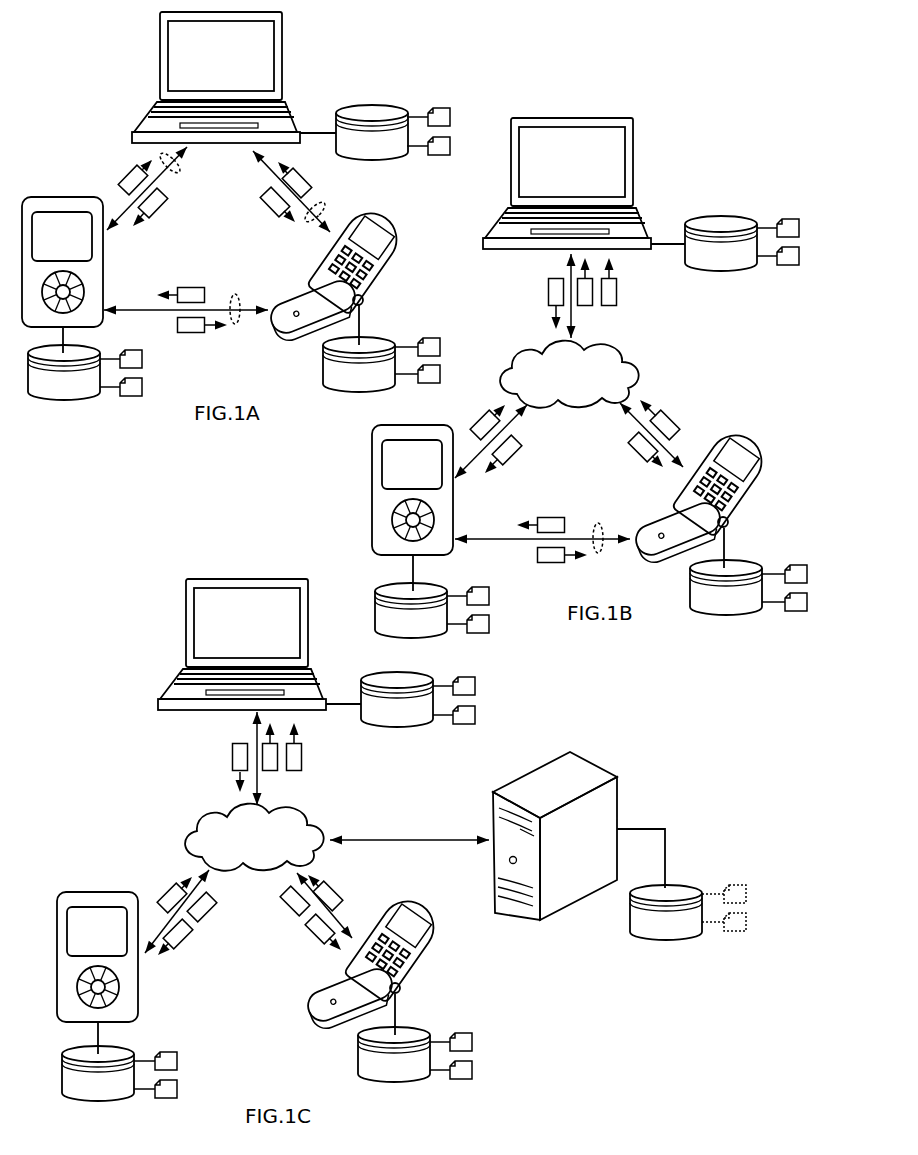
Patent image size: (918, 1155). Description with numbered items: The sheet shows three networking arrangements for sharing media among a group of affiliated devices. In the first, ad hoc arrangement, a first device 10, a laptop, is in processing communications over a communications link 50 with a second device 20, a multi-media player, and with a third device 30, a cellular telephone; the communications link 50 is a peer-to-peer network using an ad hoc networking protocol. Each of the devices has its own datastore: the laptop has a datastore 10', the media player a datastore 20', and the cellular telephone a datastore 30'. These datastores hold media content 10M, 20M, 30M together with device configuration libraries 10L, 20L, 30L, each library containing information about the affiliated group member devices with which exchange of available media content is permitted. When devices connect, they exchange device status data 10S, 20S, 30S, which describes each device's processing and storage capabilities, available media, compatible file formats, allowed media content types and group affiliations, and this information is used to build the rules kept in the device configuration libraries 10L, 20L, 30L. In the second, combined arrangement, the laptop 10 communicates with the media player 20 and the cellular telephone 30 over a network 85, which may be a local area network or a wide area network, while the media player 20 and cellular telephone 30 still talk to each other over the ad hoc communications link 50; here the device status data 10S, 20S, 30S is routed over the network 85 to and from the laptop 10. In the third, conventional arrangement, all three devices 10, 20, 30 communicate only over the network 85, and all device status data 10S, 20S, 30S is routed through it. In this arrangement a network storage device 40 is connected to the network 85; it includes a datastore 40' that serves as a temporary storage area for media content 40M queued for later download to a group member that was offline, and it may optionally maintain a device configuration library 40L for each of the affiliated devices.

In FIG. 1A, the first device 10 is at (216, 77).
In FIG. 1B, the first device 10 is at (567, 183).
In FIG. 1C, the first device 10 is at (242, 644).
In FIG. 1A, the datastore 10' is at (354, 132).
In FIG. 1B, the datastore 10' is at (704, 243).
In FIG. 1C, the datastore 10' is at (379, 699).
In FIG. 1A, the device configuration library 10L is at (451, 118).
In FIG. 1B, the device configuration library 10L is at (800, 229).
In FIG. 1C, the device configuration library 10L is at (476, 687).
In FIG. 1A, the media content 10M is at (451, 147).
In FIG. 1B, the media content 10M is at (800, 257).
In FIG. 1C, the media content 10M is at (476, 716).
In FIG. 1A, the device status data 10S is at (163, 211).
In FIG. 1B, the device status data 10S is at (550, 296).
In FIG. 1C, the device status data 10S is at (233, 760).
In FIG. 1A, the second device 20 is at (62, 262).
In FIG. 1B, the second device 20 is at (412, 490).
In FIG. 1C, the second device 20 is at (97, 957).
In FIG. 1A, the datastore 20' is at (64, 363).
In FIG. 1B, the datastore 20' is at (411, 596).
In FIG. 1C, the datastore 20' is at (98, 1061).
In FIG. 1A, the device configuration library 20L is at (143, 360).
In FIG. 1B, the device configuration library 20L is at (490, 597).
In FIG. 1C, the device configuration library 20L is at (178, 1062).
In FIG. 1A, the media content 20M is at (143, 388).
In FIG. 1B, the media content 20M is at (490, 625).
In FIG. 1C, the media content 20M is at (178, 1090).
In FIG. 1A, the device status data 20S is at (128, 173).
In FIG. 1B, the device status data 20S is at (585, 306).
In FIG. 1C, the device status data 20S is at (270, 772).
In FIG. 1A, the third device 30 is at (337, 274).
In FIG. 1B, the third device 30 is at (702, 496).
In FIG. 1C, the third device 30 is at (374, 962).
In FIG. 1A, the datastore 30' is at (359, 348).
In FIG. 1B, the datastore 30' is at (726, 571).
In FIG. 1C, the datastore 30' is at (394, 1038).
In FIG. 1A, the device configuration library 30L is at (441, 348).
In FIG. 1B, the device configuration library 30L is at (808, 575).
In FIG. 1C, the device configuration library 30L is at (473, 1043).
In FIG. 1A, the media content 30M is at (441, 375).
In FIG. 1B, the media content 30M is at (808, 603).
In FIG. 1C, the media content 30M is at (473, 1071).
In FIG. 1A, the device status data 30S is at (305, 175).
In FIG. 1B, the device status data 30S is at (609, 306).
In FIG. 1C, the device status data 30S is at (294, 772).
In FIG. 1C, the network storage device 40 is at (579, 836).
In FIG. 1C, the datastore 40' is at (666, 912).
In FIG. 1C, the device configuration library 40L is at (747, 895).
In FIG. 1C, the media content 40M is at (747, 923).
In FIG. 1A, the communications link 50 is at (177, 168).
In FIG. 1B, the communications link 50 is at (600, 525).
In FIG. 1B, the network 85 is at (569, 374).
In FIG. 1C, the network 85 is at (254, 837).